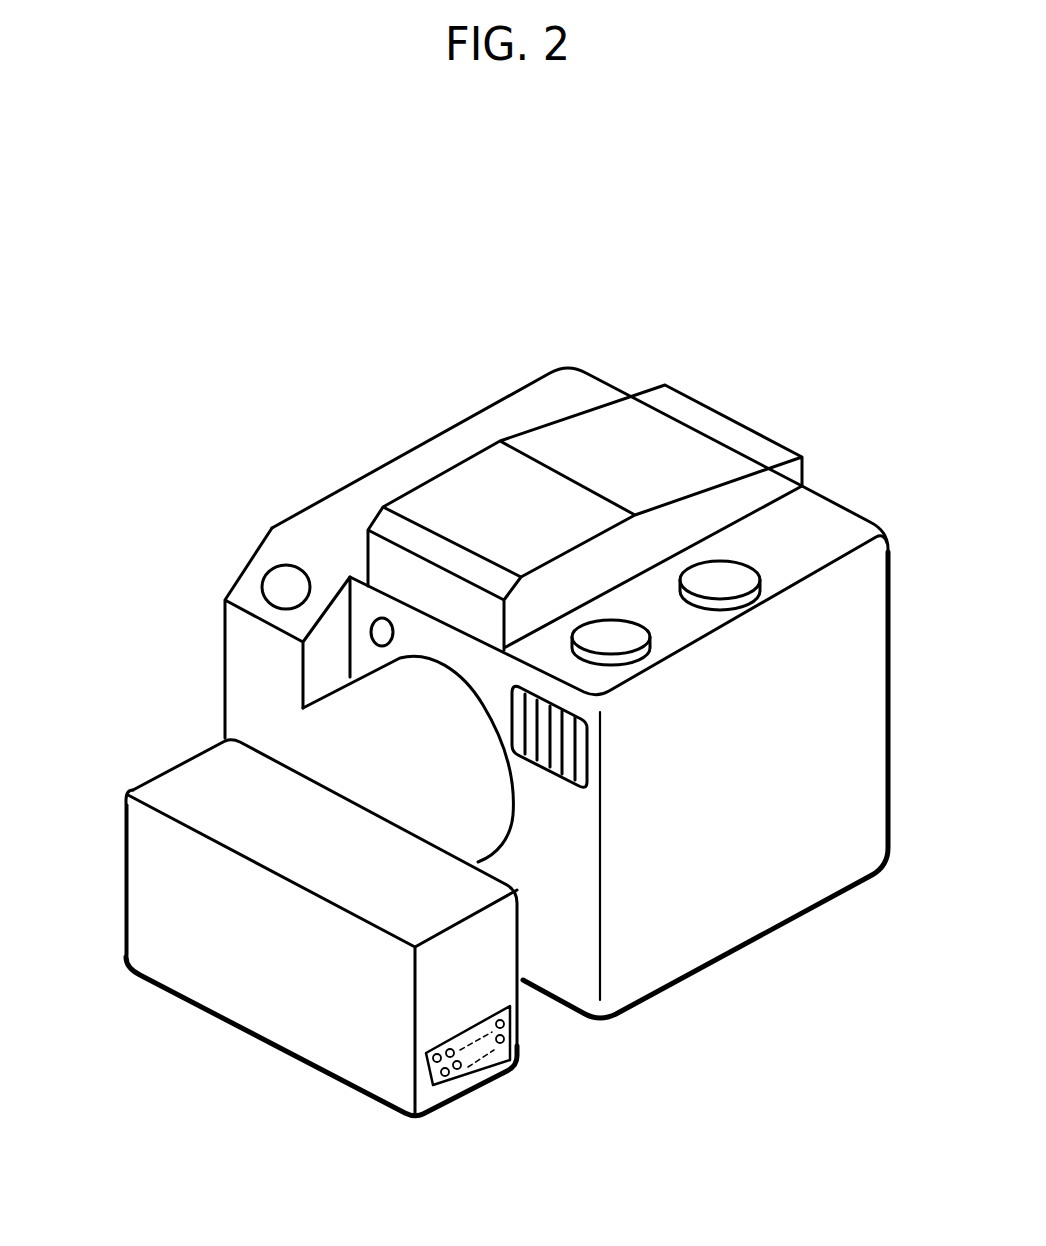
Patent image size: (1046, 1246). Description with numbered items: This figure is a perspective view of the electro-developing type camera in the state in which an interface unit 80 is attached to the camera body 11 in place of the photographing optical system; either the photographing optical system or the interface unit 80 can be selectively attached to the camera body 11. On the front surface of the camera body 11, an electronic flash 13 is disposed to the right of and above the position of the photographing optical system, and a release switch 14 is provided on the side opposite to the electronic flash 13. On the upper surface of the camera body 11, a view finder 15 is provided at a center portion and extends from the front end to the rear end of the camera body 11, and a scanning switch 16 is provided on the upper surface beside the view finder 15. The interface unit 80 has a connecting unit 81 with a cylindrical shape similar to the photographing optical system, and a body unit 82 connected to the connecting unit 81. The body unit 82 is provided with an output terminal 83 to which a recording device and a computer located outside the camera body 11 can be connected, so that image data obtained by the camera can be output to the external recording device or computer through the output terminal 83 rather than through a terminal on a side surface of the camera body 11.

The camera body 11 is at (667, 988).
The electronic flash 13 is at (573, 747).
The release switch 14 is at (287, 585).
The view finder 15 is at (468, 492).
The scanning switch 16 is at (720, 577).
The interface unit 80 is at (304, 934).
The connecting unit 81 is at (325, 750).
The body unit 82 is at (183, 912).
The output terminal 83 is at (487, 1062).